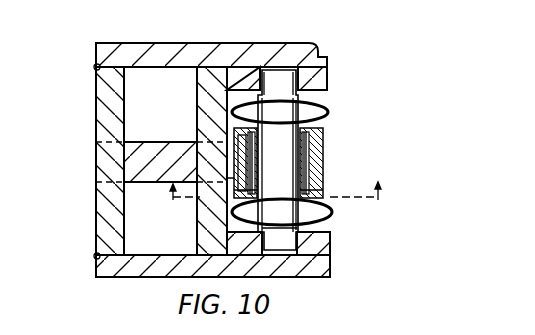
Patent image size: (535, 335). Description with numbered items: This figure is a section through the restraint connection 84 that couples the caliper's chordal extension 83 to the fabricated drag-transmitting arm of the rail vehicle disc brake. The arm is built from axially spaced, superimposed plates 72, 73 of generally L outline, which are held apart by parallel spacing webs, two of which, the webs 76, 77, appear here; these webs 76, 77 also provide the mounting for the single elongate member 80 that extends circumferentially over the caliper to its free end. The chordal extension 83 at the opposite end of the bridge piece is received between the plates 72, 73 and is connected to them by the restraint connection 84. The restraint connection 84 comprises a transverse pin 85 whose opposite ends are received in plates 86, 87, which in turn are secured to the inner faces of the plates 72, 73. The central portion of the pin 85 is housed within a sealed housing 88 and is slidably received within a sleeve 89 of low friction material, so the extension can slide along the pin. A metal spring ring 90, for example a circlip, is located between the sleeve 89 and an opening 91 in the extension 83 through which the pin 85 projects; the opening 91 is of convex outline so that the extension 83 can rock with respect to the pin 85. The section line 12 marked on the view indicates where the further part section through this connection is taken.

The section line 12 is at (279, 192).
The plate 72 is at (128, 267).
The plate 73 is at (162, 54).
The spacing web 76 is at (211, 92).
The spacing web 77 is at (110, 108).
The elongate member 80 is at (125, 172).
The chordal extension 83 is at (322, 168).
The restraint connection 84 is at (318, 127).
The transverse pin 85 is at (278, 198).
The plate 86 is at (318, 243).
The plate 87 is at (315, 80).
The sealed housing 88 is at (322, 190).
The sleeve 89 is at (232, 178).
The metal spring ring 90 is at (322, 150).
The opening 91 is at (253, 146).